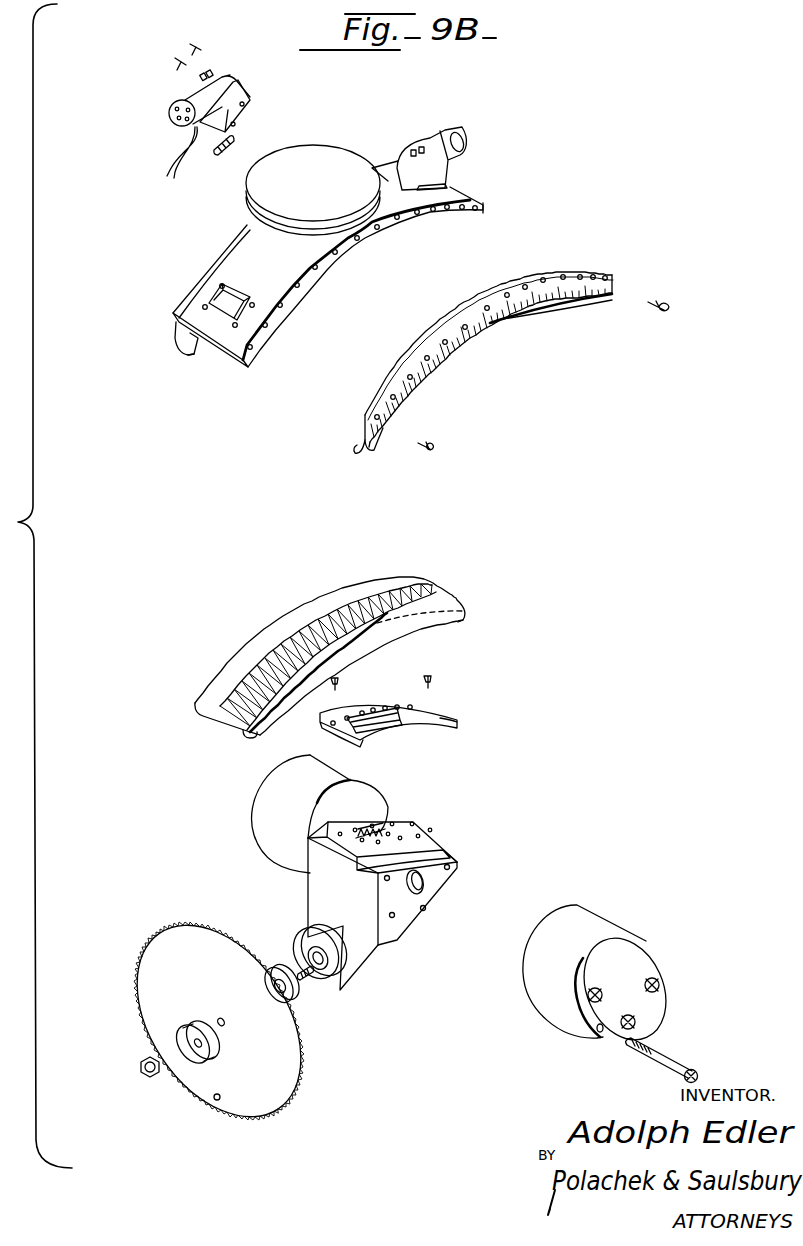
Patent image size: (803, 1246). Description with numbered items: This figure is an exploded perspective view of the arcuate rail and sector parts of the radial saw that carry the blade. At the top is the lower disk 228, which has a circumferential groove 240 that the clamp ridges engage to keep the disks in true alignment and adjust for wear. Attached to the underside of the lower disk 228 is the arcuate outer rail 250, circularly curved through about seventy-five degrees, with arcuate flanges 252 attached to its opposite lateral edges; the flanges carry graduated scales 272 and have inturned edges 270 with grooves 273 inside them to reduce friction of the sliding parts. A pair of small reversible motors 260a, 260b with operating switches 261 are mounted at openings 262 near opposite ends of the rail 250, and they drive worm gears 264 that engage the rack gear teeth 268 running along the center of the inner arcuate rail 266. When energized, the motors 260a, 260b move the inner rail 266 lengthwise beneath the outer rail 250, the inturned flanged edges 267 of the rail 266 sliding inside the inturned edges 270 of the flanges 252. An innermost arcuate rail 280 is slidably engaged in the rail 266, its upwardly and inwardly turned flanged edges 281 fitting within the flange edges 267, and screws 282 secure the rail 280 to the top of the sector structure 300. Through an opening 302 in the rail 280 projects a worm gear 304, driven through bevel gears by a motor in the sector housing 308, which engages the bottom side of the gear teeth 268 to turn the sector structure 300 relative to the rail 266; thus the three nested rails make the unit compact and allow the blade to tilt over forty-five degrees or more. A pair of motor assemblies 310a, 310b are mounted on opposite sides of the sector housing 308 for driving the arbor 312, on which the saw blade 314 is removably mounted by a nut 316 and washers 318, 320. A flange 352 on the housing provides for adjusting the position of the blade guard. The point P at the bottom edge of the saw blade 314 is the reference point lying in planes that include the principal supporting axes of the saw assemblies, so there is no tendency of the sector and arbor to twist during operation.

The lower disk 228 is at (292, 165).
The circumferential groove 240 is at (343, 236).
The arcuate outer rail 250 is at (255, 247).
The arcuate flanges 252 is at (175, 326).
The small motor 260a is at (437, 152).
The small motor 260b is at (186, 99).
The operating switches 261 is at (414, 150).
The openings 262 is at (255, 343).
The worm gears 264 is at (232, 158).
The inner arcuate rail 266 is at (293, 612).
The inturned flanged edges 267 is at (203, 715).
The rack gear teeth 268 is at (370, 593).
The inturned edges 270 is at (178, 353).
The graduated scales 272 is at (432, 367).
The grooves 273 is at (185, 358).
The innermost arcuate rail 280 is at (417, 730).
The upwardly and inwardly turned flanged edges 281 is at (443, 723).
The screws 282 is at (432, 677).
The sector structure 300 is at (401, 947).
The opening 302 is at (357, 722).
The worm gear 304 is at (372, 825).
The sector housing 308 is at (413, 917).
The motor assembly 310a is at (558, 992).
The motor assembly 310b is at (270, 803).
The arbor 312 is at (312, 973).
The saw blade 314 is at (253, 1090).
The nut 316 is at (150, 1078).
The washer 318 is at (190, 1022).
The washer 320 is at (283, 967).
The flange 352 is at (340, 970).
The point of reference P is at (215, 1100).